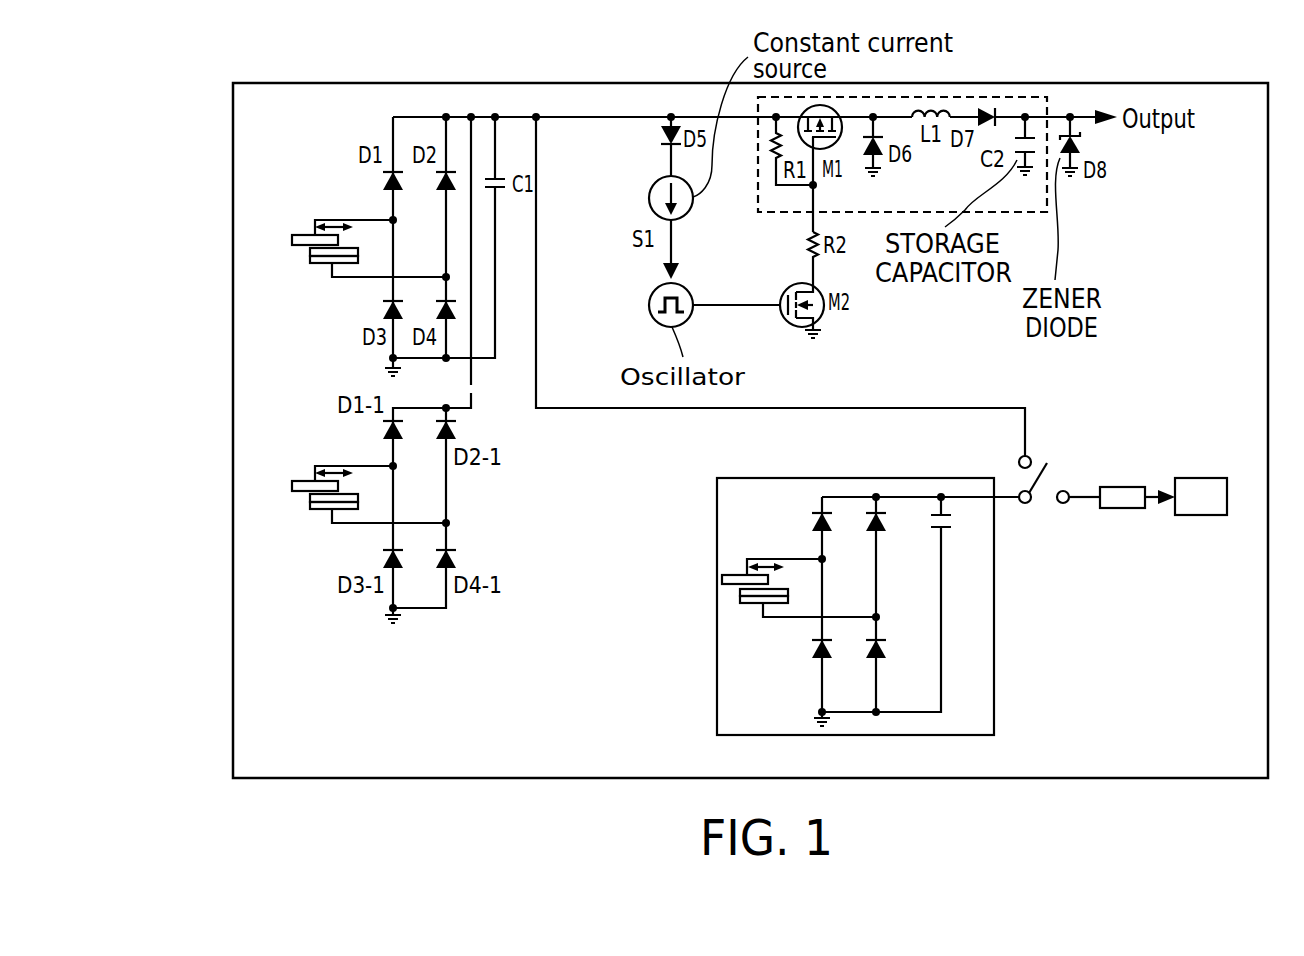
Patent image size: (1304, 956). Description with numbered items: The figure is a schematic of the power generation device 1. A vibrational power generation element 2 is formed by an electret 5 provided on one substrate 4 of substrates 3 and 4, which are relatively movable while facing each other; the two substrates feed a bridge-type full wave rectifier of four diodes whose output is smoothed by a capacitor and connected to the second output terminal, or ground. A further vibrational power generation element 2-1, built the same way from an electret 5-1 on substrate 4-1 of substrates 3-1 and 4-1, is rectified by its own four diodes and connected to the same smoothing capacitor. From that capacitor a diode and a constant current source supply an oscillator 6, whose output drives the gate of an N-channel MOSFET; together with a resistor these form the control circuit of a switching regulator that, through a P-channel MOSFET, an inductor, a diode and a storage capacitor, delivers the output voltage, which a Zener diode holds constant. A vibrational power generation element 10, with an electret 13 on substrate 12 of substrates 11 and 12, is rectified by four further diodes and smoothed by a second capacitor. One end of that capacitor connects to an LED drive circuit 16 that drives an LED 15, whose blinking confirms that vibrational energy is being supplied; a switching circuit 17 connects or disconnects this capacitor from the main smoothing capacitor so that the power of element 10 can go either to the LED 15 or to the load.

The power generation device 1 is at (287, 82).
The vibrational power generation element 2 is at (344, 235).
The substrate 3 is at (313, 234).
The substrate 4 is at (330, 265).
The electret 5 is at (310, 252).
The vibrational power generation element 2-1 is at (346, 466).
The substrate 3-1 is at (300, 482).
The substrate 4-1 is at (308, 517).
The electret 5-1 is at (310, 500).
The oscillator 6 is at (657, 327).
The vibrational power generation element 10 is at (843, 598).
The substrate 11 is at (737, 574).
The substrate 12 is at (738, 603).
The electret 13 is at (740, 592).
The LED 15 is at (1200, 478).
The LED drive circuit 16 is at (1117, 485).
The switching circuit 17 is at (1033, 500).